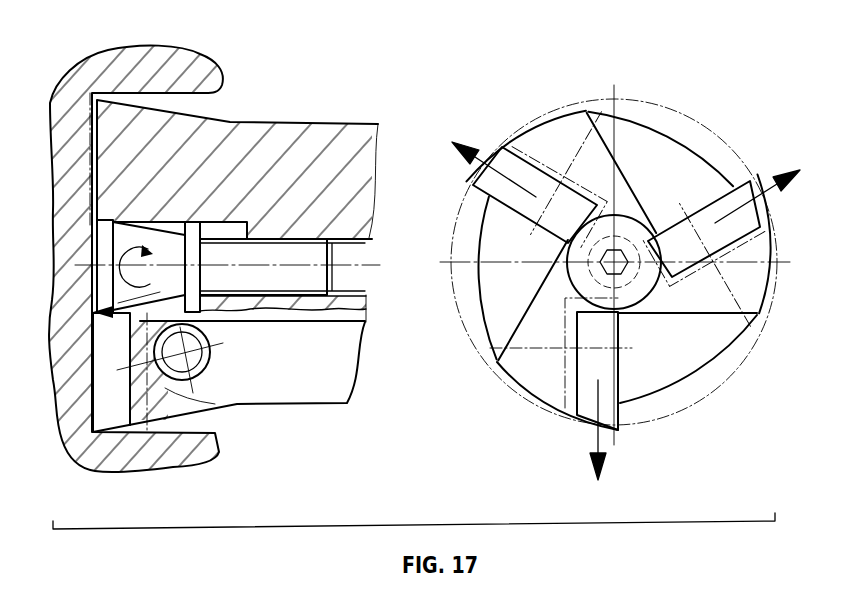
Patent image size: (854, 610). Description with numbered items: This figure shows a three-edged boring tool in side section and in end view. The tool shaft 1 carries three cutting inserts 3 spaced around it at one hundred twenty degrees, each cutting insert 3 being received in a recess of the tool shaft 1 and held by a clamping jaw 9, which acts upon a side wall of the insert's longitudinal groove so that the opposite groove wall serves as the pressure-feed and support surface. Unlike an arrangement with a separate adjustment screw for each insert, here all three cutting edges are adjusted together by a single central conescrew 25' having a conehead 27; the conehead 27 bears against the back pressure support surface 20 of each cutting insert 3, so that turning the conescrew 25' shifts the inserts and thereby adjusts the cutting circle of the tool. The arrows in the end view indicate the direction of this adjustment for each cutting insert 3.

The tool shaft 1 is at (270, 393).
The cutting insert 3 is at (107, 427).
The clamping jaw 9 is at (157, 377).
The back pressure support surface 20 is at (93, 312).
The central conescrew 25' is at (377, 192).
The conehead 27 is at (165, 222).